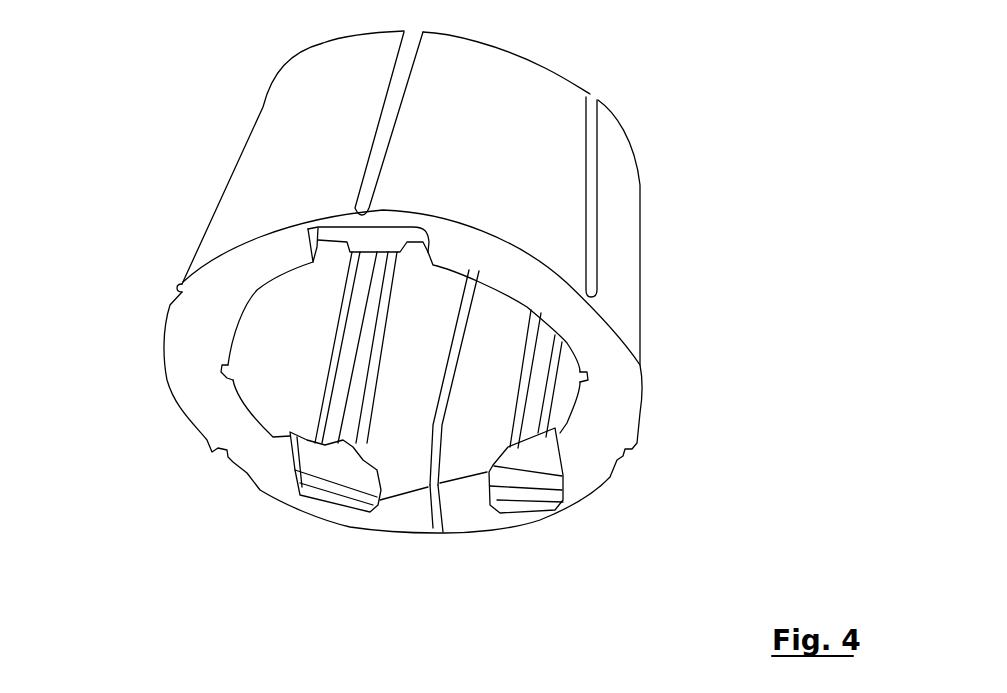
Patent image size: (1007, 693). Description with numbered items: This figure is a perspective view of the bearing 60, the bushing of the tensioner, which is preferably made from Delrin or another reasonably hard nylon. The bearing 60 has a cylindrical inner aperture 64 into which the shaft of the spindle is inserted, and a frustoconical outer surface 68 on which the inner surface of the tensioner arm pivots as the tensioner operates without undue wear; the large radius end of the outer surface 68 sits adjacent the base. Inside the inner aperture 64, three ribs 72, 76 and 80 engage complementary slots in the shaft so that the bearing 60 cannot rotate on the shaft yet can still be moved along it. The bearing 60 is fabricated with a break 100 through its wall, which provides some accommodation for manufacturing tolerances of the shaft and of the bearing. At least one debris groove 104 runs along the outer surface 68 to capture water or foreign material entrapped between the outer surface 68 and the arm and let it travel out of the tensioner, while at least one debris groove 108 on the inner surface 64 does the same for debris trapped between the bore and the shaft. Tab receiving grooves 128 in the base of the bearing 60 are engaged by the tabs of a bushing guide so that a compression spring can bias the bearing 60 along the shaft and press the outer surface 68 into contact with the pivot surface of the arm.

The bearing 60 is at (423, 316).
The cylindrical inner aperture 64 is at (260, 387).
The outer surface 68 is at (270, 145).
The rib 72 is at (350, 433).
The rib 76 is at (513, 447).
The rib 80 is at (403, 252).
The break 100 is at (437, 510).
The debris groove 104 is at (390, 110).
The debris groove 108 is at (223, 372).
The tab receiving groove 128 is at (367, 233).